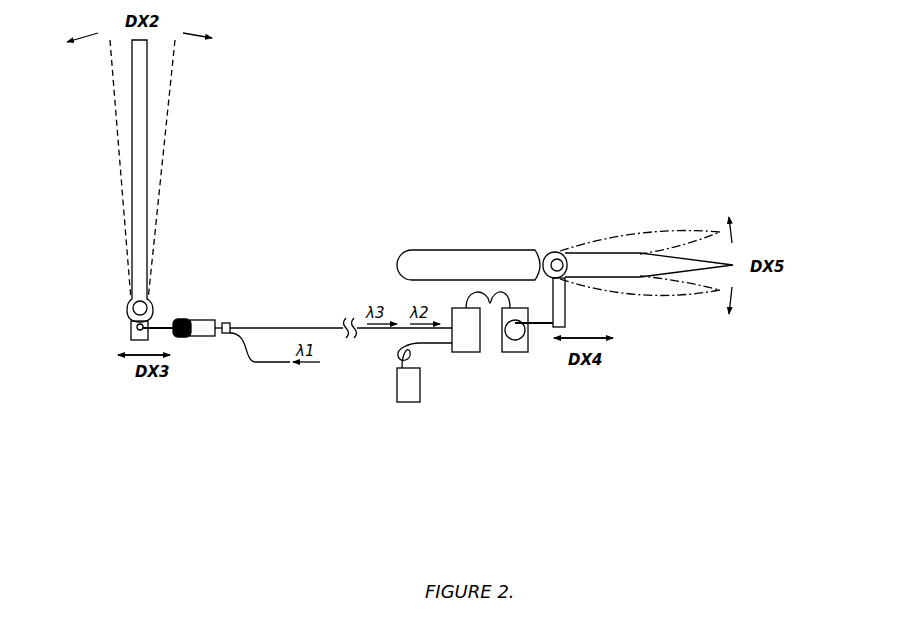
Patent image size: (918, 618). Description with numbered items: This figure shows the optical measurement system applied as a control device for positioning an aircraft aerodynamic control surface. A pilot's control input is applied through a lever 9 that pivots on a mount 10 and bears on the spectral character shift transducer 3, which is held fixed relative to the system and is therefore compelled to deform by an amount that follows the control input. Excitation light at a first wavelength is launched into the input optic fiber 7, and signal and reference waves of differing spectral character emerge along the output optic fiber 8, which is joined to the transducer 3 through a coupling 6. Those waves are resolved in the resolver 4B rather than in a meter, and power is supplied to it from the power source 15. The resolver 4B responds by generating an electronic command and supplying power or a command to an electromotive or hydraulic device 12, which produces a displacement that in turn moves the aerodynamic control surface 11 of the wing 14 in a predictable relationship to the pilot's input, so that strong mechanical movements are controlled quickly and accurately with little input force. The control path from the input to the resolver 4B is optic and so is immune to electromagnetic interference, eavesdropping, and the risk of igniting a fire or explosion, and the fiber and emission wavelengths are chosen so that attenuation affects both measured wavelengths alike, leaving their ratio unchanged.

The spectral character shift transducer 3 is at (203, 341).
The resolver 4B is at (462, 356).
The connector 6 is at (231, 318).
The input optic fiber 7 is at (250, 365).
The output optic fiber 8 is at (312, 325).
The pivoting rod / tail arm 9 is at (153, 69).
The pivot joint 10 is at (127, 313).
The aerodynamic control surface 11 is at (596, 247).
The electromotive or hydraulic device 12 is at (520, 356).
The wing 14 is at (490, 249).
The power source 15 is at (394, 386).